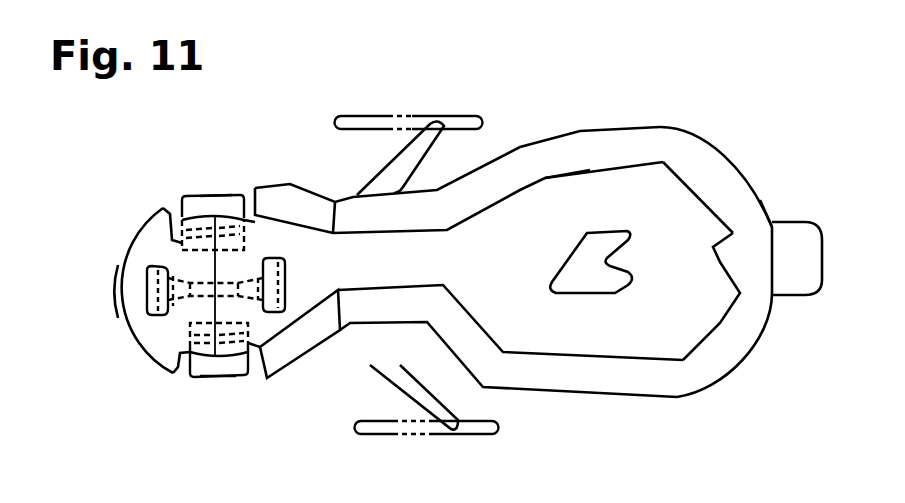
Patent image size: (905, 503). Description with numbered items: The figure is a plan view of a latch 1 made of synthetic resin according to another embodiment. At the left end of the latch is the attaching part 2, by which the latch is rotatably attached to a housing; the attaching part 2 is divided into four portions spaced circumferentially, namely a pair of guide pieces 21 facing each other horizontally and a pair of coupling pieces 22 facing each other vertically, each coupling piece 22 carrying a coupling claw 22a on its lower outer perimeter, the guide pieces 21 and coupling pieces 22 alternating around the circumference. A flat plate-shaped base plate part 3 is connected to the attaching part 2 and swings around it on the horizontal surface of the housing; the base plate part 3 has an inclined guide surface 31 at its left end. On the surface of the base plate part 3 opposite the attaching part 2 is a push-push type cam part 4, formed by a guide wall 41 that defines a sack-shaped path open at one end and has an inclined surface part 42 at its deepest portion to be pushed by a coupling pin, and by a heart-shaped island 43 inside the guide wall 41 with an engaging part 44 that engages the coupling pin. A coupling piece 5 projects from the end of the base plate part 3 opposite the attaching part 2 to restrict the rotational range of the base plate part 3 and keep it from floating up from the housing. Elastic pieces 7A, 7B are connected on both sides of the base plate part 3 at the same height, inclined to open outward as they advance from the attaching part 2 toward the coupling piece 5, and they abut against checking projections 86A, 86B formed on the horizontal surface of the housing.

The latch 1 is at (763, 191).
The attaching part 2 is at (147, 285).
The base plate part 3 is at (625, 343).
The cam part 4 is at (553, 130).
The coupling piece 5 is at (797, 283).
The elastic piece 7A is at (393, 167).
The elastic piece 7B is at (407, 395).
The guide piece 21 is at (153, 302).
The coupling piece 22 is at (190, 200).
The coupling claw 22a is at (221, 200).
The guide surface 31 is at (160, 243).
The guide wall 41 is at (661, 147).
The inclined surface part 42 is at (725, 265).
The heart-shaped island 43 is at (588, 250).
The engaging part 44 is at (636, 250).
The checking projection 86A is at (463, 113).
The checking projection 86B is at (477, 427).